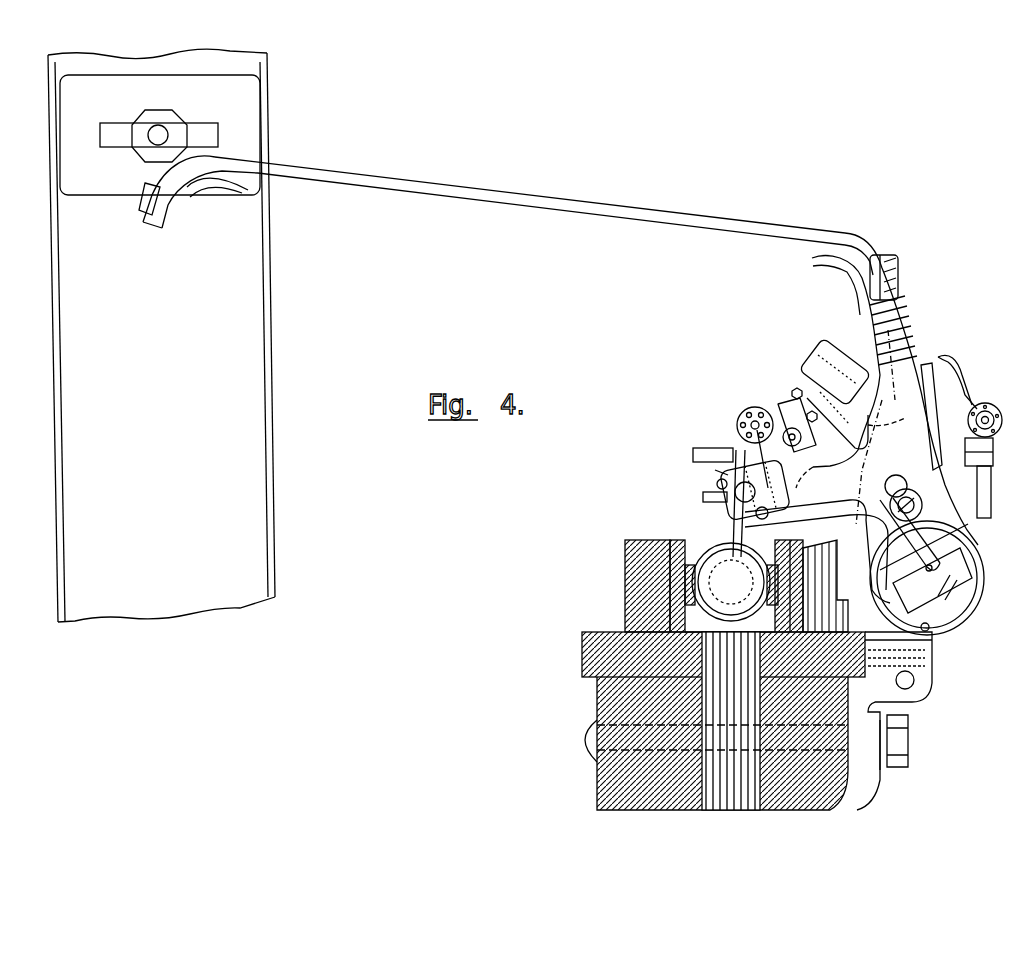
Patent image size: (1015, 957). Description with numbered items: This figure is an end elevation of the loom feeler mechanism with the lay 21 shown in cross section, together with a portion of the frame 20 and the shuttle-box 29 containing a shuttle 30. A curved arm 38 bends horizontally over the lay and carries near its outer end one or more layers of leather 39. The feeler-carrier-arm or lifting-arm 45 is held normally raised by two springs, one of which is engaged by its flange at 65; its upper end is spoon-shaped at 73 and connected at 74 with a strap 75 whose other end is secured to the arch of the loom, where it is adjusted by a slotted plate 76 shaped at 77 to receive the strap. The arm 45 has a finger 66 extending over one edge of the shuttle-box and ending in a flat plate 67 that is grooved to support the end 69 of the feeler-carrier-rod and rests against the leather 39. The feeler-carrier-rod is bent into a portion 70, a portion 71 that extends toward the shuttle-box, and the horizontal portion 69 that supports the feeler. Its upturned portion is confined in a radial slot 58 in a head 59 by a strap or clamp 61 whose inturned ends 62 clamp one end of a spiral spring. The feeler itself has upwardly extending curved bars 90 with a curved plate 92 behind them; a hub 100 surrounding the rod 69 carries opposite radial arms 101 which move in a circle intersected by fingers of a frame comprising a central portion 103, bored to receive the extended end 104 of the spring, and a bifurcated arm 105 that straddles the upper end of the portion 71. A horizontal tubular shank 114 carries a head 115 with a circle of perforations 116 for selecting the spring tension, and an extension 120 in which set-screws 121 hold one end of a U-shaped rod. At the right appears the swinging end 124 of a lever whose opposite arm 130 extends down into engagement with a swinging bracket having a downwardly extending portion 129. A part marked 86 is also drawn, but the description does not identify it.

The frame 20 is at (277, 355).
The lay 21 is at (581, 658).
The shuttle-box 29 is at (668, 540).
The shuttle 30 is at (697, 542).
The curved arm 38 is at (800, 390).
The leather layers 39 is at (812, 358).
The feeler-carrier-arm 45 is at (908, 430).
The radial slot 58 is at (952, 600).
The head 59 is at (930, 612).
The strap or clamp 61 is at (965, 600).
The clamp ends 62 is at (975, 585).
The spring engagement point 65 is at (925, 480).
The finger 66 is at (819, 466).
The flat plate 67 is at (703, 497).
The horizontal portion of feeler-carrier-rod 69 is at (717, 485).
The rod portion 70 is at (968, 530).
The rod portion 71 is at (816, 545).
The spoon-shaped end 73 is at (850, 273).
The strap connection 74 is at (892, 270).
The strap 75 is at (553, 216).
The slotted plate 76 is at (243, 125).
The strap-receiving portion 77 is at (230, 190).
The strip 86 is at (928, 365).
The curved bars 90 is at (782, 458).
The plate 92 is at (766, 515).
The hub 100 is at (728, 545).
The radial arms 101 is at (714, 472).
The central portion 103 is at (766, 459).
The extended spring end 104 is at (745, 465).
The bifurcated arm 105 is at (790, 488).
The tubular shank 114 is at (810, 436).
The head 115 is at (740, 430).
The perforations 116 is at (742, 420).
The extension 120 is at (790, 403).
The set-screws 121 is at (790, 396).
The lever end 124 is at (948, 366).
The downwardly extending bracket portion 129 is at (984, 497).
The lever arm 130 is at (967, 452).